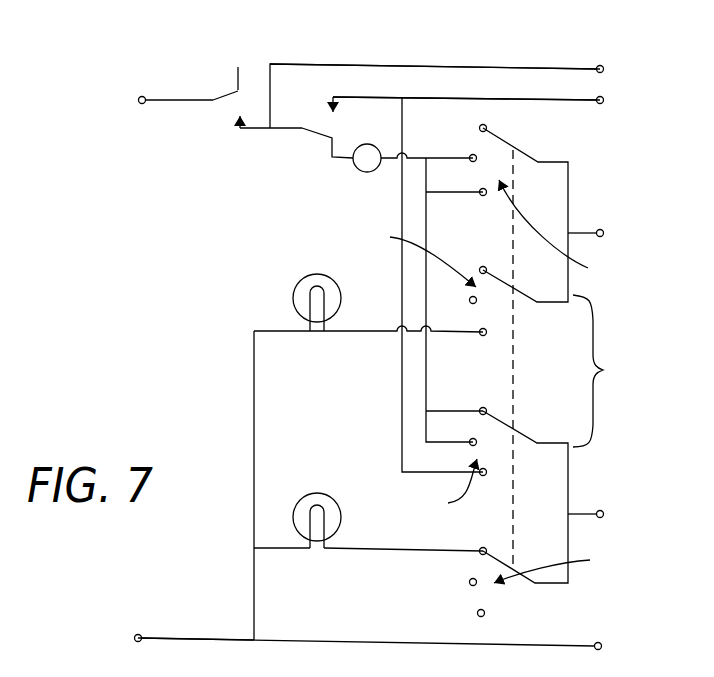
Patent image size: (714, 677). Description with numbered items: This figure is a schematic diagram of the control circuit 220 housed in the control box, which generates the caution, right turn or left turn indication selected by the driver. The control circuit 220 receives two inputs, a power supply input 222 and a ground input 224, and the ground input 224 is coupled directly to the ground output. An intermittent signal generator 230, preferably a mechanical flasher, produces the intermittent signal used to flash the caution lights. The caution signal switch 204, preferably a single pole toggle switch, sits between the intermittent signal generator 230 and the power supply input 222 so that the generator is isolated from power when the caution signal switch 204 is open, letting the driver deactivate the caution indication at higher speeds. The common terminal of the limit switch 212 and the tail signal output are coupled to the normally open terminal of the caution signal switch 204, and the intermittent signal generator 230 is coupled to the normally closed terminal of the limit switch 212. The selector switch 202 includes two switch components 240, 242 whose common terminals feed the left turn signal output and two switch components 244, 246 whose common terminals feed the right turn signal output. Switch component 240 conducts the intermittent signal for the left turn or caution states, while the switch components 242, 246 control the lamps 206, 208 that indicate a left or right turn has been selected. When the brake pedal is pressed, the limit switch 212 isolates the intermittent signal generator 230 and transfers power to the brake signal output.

The caution signal switch 204 is at (213, 98).
The power supply input 222 is at (167, 103).
The limit switch 212 is at (305, 133).
The intermittent signal generator 230 is at (365, 166).
The ground input 224 is at (198, 638).
The control circuit 220 is at (248, 350).
The lamp 206 is at (303, 290).
The lamp 208 is at (305, 507).
The selector switch 202 is at (614, 371).
The switch component 240 is at (569, 232).
The switch component 242 is at (409, 254).
The switch component 244 is at (437, 490).
The switch component 246 is at (566, 564).